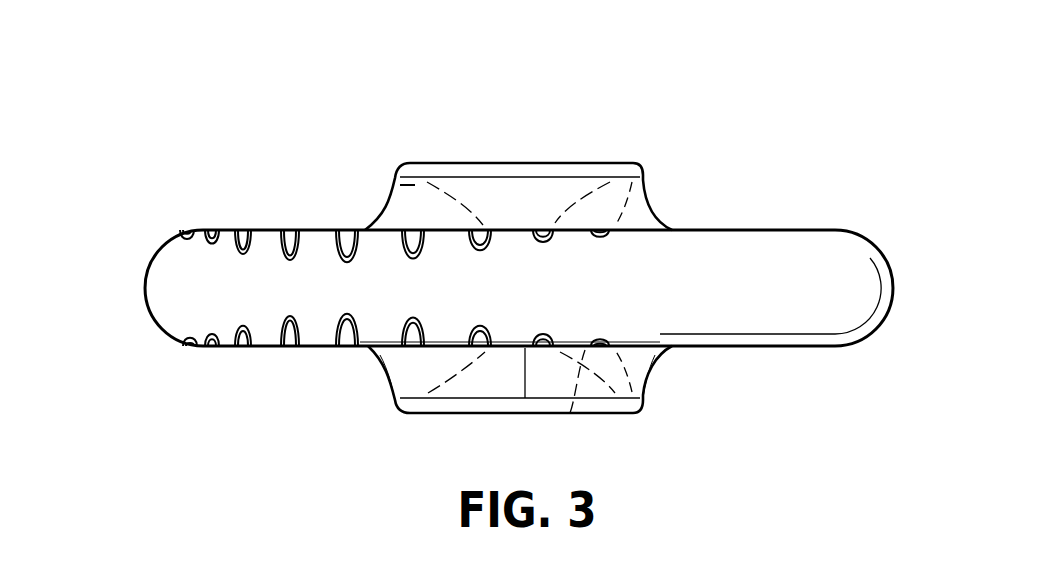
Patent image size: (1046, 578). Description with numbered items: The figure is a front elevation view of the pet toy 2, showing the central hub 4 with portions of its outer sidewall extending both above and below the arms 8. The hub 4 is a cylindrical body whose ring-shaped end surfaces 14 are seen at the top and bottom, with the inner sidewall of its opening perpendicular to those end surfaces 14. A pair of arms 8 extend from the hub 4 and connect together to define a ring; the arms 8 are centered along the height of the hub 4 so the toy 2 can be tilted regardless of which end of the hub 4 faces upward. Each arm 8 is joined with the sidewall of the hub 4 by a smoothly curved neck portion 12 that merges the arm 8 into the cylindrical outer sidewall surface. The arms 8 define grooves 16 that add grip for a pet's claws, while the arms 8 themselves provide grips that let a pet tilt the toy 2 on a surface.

The pet toy 2 is at (498, 270).
The hub 4 is at (410, 185).
The arms 8 is at (160, 265).
The neck portion 12 is at (393, 365).
The end surfaces 14 is at (578, 165).
The grooves 16 is at (340, 230).